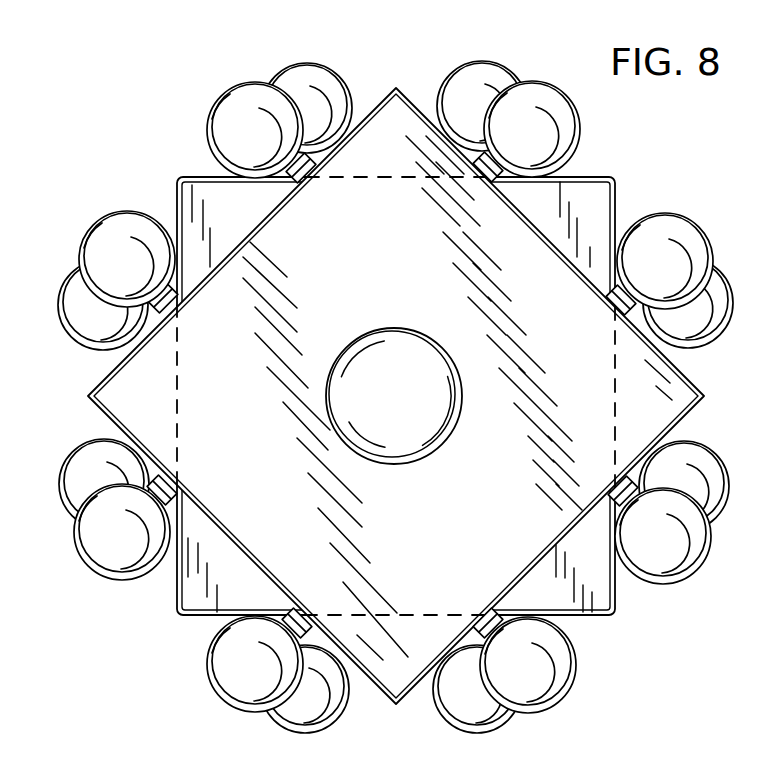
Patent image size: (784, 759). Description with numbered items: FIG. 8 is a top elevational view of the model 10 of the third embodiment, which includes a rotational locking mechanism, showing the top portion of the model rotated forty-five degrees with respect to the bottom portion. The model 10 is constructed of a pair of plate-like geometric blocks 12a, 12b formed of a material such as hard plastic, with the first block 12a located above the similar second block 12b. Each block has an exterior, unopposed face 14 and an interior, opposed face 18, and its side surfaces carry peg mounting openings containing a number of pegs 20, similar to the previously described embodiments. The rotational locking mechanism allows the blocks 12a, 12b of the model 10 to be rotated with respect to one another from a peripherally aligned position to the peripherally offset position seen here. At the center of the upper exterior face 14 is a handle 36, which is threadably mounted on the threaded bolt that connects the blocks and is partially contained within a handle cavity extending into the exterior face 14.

The model 10 is at (130, 184).
The first plate-like geometric block 12a is at (368, 416).
The second plate-like geometric block 12b is at (424, 395).
The exterior, unopposed face 14 is at (406, 675).
The interior, opposed face 18 is at (545, 595).
The pegs 20 is at (455, 78).
The handle 36 is at (388, 350).